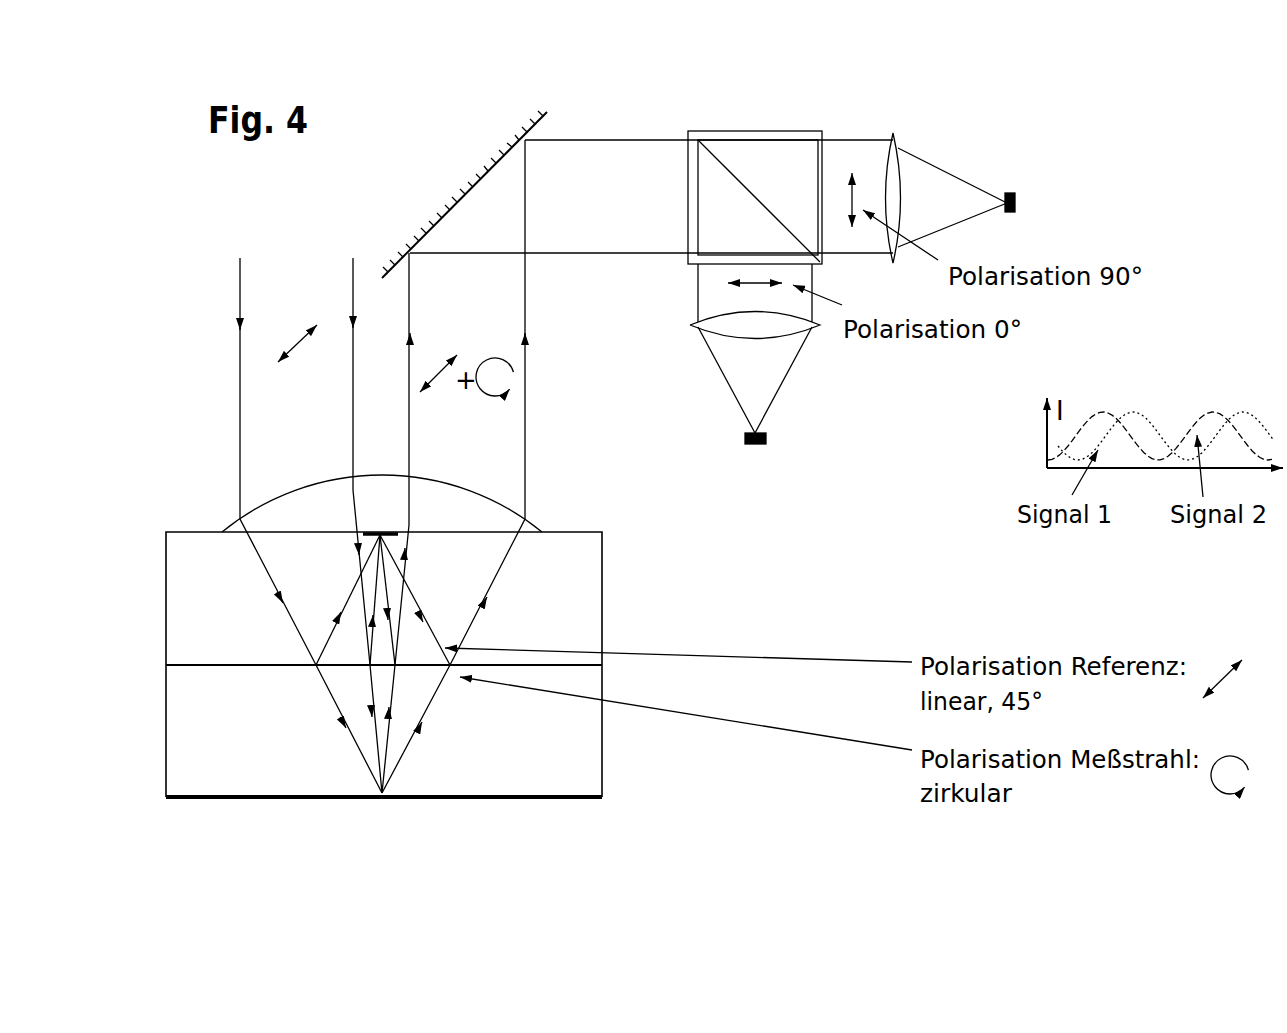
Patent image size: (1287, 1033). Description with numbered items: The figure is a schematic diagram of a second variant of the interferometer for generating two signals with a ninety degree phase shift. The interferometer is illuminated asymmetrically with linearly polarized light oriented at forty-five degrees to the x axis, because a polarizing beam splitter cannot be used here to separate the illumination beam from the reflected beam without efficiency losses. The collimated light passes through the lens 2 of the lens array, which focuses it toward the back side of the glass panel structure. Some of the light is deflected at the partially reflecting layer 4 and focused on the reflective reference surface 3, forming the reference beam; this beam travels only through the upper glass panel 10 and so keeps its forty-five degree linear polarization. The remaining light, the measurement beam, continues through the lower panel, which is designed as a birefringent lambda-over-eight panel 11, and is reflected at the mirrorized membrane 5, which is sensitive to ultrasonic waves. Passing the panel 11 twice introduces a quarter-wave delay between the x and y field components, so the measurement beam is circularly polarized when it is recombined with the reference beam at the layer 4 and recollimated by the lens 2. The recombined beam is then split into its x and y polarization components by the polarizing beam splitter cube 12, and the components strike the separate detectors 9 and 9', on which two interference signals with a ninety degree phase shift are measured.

The lens 2 is at (287, 512).
The reference surface 3 is at (362, 538).
The partially reflecting layer 4 is at (238, 665).
The membrane 5 is at (267, 800).
The detector 9 is at (782, 473).
The detector 9' is at (1076, 201).
The upper glass panel 10 is at (612, 622).
The birefringent lambda/8 panel 11 is at (612, 737).
The polarizing beam splitter cube 12 is at (813, 122).